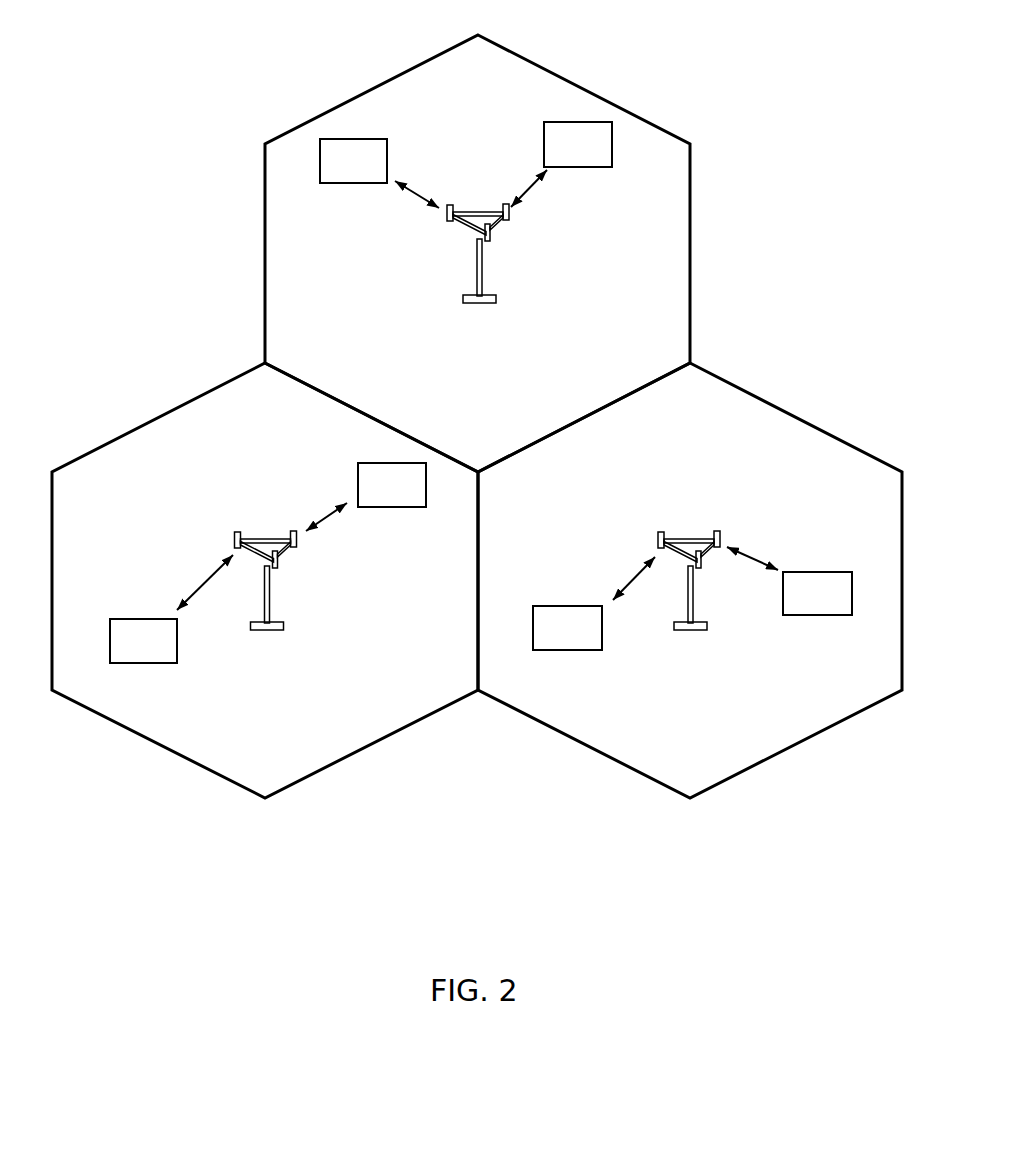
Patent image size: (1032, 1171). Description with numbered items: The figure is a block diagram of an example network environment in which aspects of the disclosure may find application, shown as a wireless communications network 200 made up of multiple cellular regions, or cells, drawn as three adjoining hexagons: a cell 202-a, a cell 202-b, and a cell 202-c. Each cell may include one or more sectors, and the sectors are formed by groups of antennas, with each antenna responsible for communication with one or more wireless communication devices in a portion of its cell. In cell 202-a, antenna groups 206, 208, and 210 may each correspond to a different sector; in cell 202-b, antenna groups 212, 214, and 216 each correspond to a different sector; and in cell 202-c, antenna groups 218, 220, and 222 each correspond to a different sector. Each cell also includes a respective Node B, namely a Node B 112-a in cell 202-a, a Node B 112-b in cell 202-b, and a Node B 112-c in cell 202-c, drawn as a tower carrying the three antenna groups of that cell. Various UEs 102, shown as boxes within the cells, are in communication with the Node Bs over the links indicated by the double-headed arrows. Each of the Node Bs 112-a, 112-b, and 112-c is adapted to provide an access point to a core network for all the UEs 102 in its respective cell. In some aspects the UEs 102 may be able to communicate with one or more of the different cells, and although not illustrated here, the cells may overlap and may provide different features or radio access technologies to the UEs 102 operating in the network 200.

The wireless communications network 200 is at (810, 67).
The cell 202-a is at (133, 430).
The cell 202-b is at (567, 80).
The cell 202-c is at (794, 416).
The UE 102 is at (345, 184).
The Node B 112-a is at (266, 561).
The Node B 112-b is at (477, 233).
The Node B 112-c is at (688, 561).
The antenna group 206 is at (209, 525).
The antenna group 208 is at (305, 576).
The antenna group 210 is at (323, 554).
The antenna group 212 is at (419, 230).
The antenna group 214 is at (517, 249).
The antenna group 216 is at (536, 226).
The antenna group 218 is at (630, 527).
The antenna group 220 is at (729, 576).
The antenna group 222 is at (747, 524).